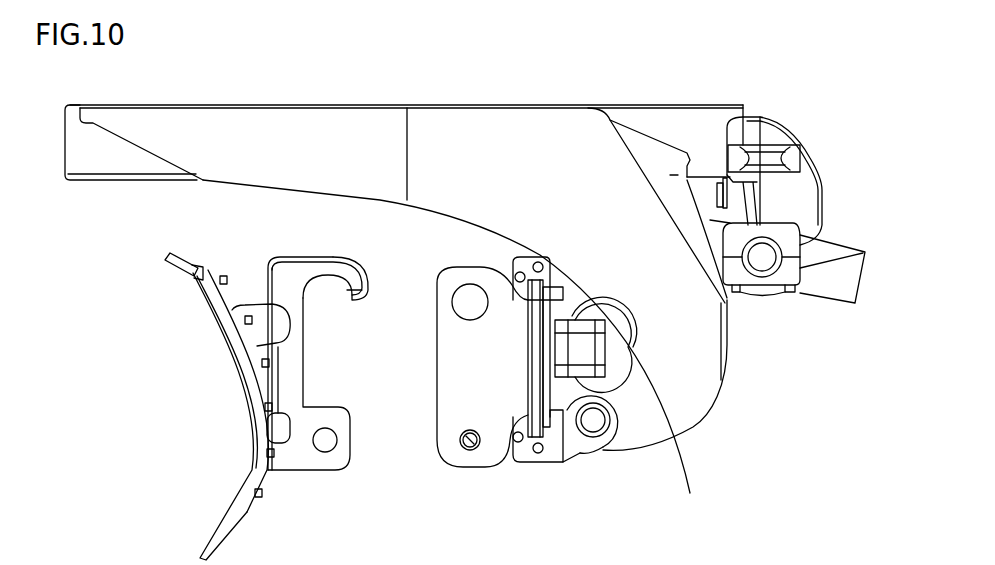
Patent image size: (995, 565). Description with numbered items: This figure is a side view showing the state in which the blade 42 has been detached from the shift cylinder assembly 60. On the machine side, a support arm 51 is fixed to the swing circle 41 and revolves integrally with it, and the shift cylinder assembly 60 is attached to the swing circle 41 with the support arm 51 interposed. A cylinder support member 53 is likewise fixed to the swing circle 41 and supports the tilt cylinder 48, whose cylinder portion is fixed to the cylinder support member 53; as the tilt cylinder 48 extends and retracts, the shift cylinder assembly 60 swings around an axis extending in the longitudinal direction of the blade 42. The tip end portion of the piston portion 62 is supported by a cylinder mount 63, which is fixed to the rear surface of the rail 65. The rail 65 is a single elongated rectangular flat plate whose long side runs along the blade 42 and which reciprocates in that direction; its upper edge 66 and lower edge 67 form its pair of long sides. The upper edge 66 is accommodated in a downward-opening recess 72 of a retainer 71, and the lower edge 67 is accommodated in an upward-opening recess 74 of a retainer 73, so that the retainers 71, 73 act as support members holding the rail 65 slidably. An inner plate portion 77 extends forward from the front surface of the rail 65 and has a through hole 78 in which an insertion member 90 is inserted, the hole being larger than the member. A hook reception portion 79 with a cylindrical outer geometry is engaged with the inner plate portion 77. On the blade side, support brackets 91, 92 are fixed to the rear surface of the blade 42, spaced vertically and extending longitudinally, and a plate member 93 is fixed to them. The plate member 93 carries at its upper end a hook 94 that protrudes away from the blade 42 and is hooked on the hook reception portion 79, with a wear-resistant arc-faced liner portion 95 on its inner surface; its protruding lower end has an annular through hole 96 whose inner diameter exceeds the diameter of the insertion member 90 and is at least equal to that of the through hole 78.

The support arm 51 is at (218, 130).
The swing circle 41 is at (85, 157).
The blade 42 is at (235, 335).
The tilt cylinder 48 is at (843, 255).
The cylinder support member 53 is at (807, 187).
The shift cylinder assembly 60 is at (696, 429).
The piston portion 62 is at (673, 427).
The cylinder mount 63 is at (592, 355).
The rail 65 is at (535, 383).
The upper edge 66 is at (520, 260).
The lower edge 67 is at (527, 430).
The retainer 71 is at (517, 264).
The recess 72 is at (515, 278).
The retainer 73 is at (523, 450).
The recess 74 is at (542, 433).
The inner plate portion 77 is at (450, 348).
The through hole 78 is at (462, 440).
The hook reception portion 79 is at (463, 302).
The insertion member 90 is at (475, 452).
The support bracket 91 is at (263, 325).
The support bracket 92 is at (278, 430).
The plate member 93 is at (278, 287).
The hook 94 is at (328, 270).
The liner portion 95 is at (332, 290).
The through hole 96 is at (328, 447).